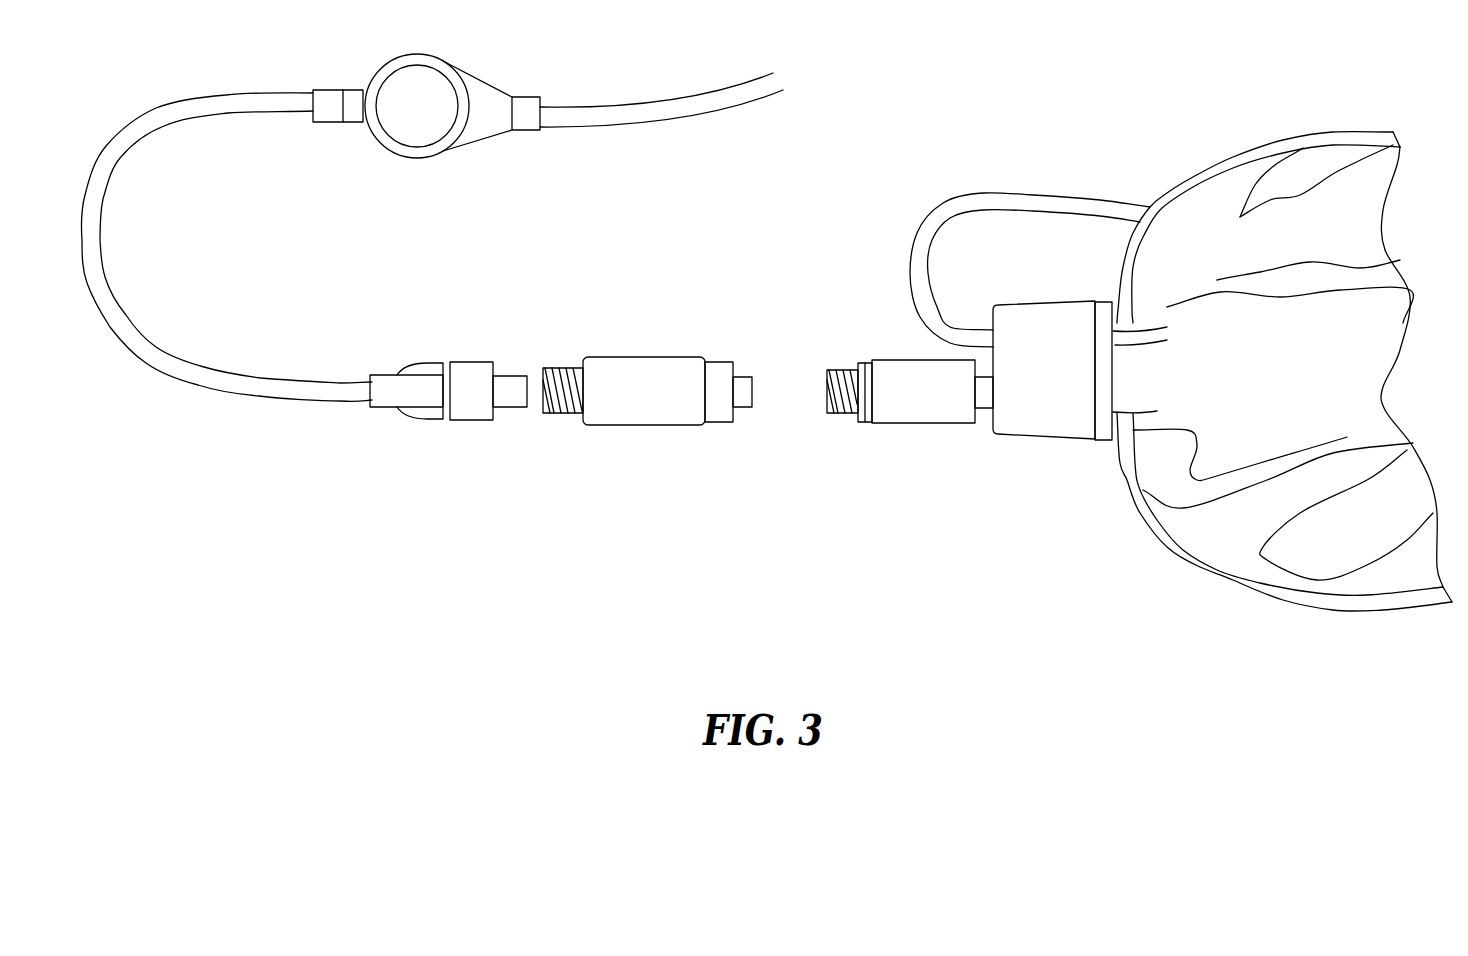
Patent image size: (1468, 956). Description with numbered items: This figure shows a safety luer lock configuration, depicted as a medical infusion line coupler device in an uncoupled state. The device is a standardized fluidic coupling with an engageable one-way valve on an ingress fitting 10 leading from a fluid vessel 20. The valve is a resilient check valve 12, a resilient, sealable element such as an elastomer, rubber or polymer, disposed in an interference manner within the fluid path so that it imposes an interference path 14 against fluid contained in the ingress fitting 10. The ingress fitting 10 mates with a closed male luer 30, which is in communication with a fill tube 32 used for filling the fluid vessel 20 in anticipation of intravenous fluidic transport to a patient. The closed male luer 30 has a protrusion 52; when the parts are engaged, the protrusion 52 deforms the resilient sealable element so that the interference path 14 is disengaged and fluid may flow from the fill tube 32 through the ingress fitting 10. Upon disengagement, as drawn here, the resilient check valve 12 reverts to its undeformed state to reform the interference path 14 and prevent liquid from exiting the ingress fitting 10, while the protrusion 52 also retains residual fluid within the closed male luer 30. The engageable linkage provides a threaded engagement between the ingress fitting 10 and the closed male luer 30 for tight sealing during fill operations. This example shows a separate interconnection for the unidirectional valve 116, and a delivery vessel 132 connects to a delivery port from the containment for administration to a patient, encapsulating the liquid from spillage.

The ingress fitting 10 is at (890, 423).
The resilient check valve 12 is at (828, 372).
The interference path 14 is at (808, 378).
The fluid vessel 20 is at (1262, 376).
The closed male luer 30 is at (629, 406).
The fill tube 32 is at (163, 370).
The protrusion 52 is at (748, 407).
The unidirectional valve 116 is at (1033, 385).
The delivery vessel 132 is at (968, 193).